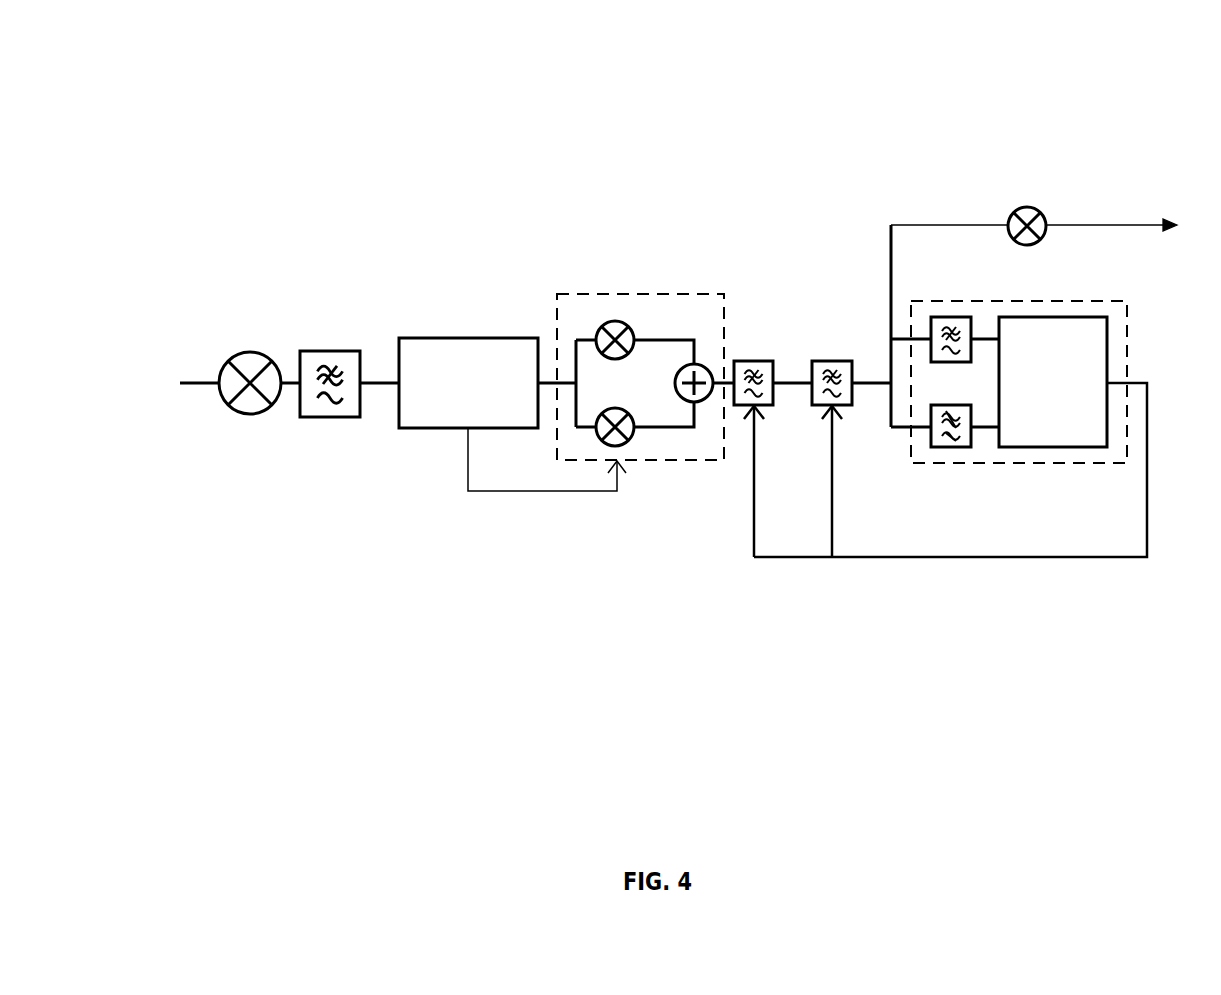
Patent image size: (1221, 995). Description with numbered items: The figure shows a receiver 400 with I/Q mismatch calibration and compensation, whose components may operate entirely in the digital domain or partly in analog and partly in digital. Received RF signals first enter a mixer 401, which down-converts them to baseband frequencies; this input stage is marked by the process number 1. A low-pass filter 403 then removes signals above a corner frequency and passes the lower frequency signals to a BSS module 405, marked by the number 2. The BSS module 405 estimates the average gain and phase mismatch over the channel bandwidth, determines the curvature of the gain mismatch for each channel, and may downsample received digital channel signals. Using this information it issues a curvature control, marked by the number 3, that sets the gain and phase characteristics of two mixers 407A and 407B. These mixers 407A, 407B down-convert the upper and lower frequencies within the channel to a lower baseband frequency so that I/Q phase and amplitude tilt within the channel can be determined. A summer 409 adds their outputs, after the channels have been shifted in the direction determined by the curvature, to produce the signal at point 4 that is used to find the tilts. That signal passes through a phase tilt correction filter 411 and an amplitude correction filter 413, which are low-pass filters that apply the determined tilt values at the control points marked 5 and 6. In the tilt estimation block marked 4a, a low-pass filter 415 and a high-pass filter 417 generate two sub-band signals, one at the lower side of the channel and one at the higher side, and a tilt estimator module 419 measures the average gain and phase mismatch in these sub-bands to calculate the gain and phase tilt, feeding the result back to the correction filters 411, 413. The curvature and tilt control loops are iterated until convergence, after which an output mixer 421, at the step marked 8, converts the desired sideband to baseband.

The receiver 400 is at (252, 102).
The mixer 401 is at (242, 351).
The low-pass filter 403 is at (348, 351).
The BSS module 405 is at (484, 406).
The mixer 407A is at (619, 320).
The mixer 407B is at (636, 442).
The summer 409 is at (700, 362).
The phase tilt correction filter 411 is at (760, 361).
The amplitude correction filter 413 is at (818, 361).
The low-pass filter 415 is at (940, 317).
The high-pass filter 417 is at (934, 447).
The tilt estimator module 419 is at (1037, 421).
The output mixer 421 is at (1041, 206).
The step one of the I/Q mismatch calibration and compensation process 1 is at (245, 340).
The step two of the I/Q mismatch calibration and compensation process 2 is at (468, 338).
The step three of the I/Q mismatch calibration and compensation process 3 is at (538, 478).
The step four of the I/Q mismatch calibration and compensation process 4 is at (717, 413).
The step five of the I/Q mismatch calibration and compensation process 5 is at (778, 470).
The step six of the I/Q mismatch calibration and compensation process 6 is at (856, 470).
The step eight of the I/Q mismatch calibration and compensation process 8 is at (1034, 203).
The tilt estimation sub-step 4a is at (1019, 366).